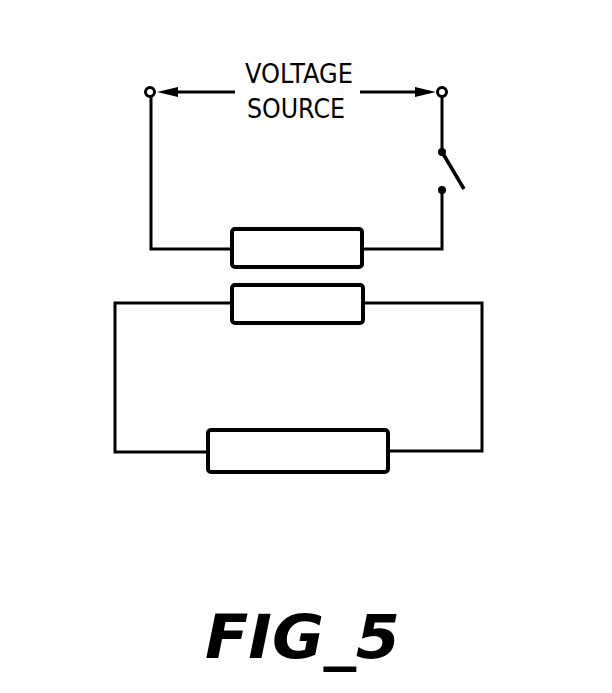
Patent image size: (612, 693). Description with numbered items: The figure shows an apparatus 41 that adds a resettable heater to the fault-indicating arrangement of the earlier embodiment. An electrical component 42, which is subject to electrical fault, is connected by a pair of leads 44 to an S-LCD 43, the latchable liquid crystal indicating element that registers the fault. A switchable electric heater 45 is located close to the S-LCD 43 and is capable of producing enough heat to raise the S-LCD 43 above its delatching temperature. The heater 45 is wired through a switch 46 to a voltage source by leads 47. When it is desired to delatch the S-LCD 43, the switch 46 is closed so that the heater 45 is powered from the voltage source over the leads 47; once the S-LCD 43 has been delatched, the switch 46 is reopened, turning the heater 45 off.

The apparatus 41 is at (112, 243).
The electrical component 42 is at (292, 472).
The S-LCD 43 is at (300, 323).
The leads 44 is at (190, 455).
The switchable electric heater 45 is at (302, 229).
The switch 46 is at (463, 178).
The leads 47 is at (145, 92).